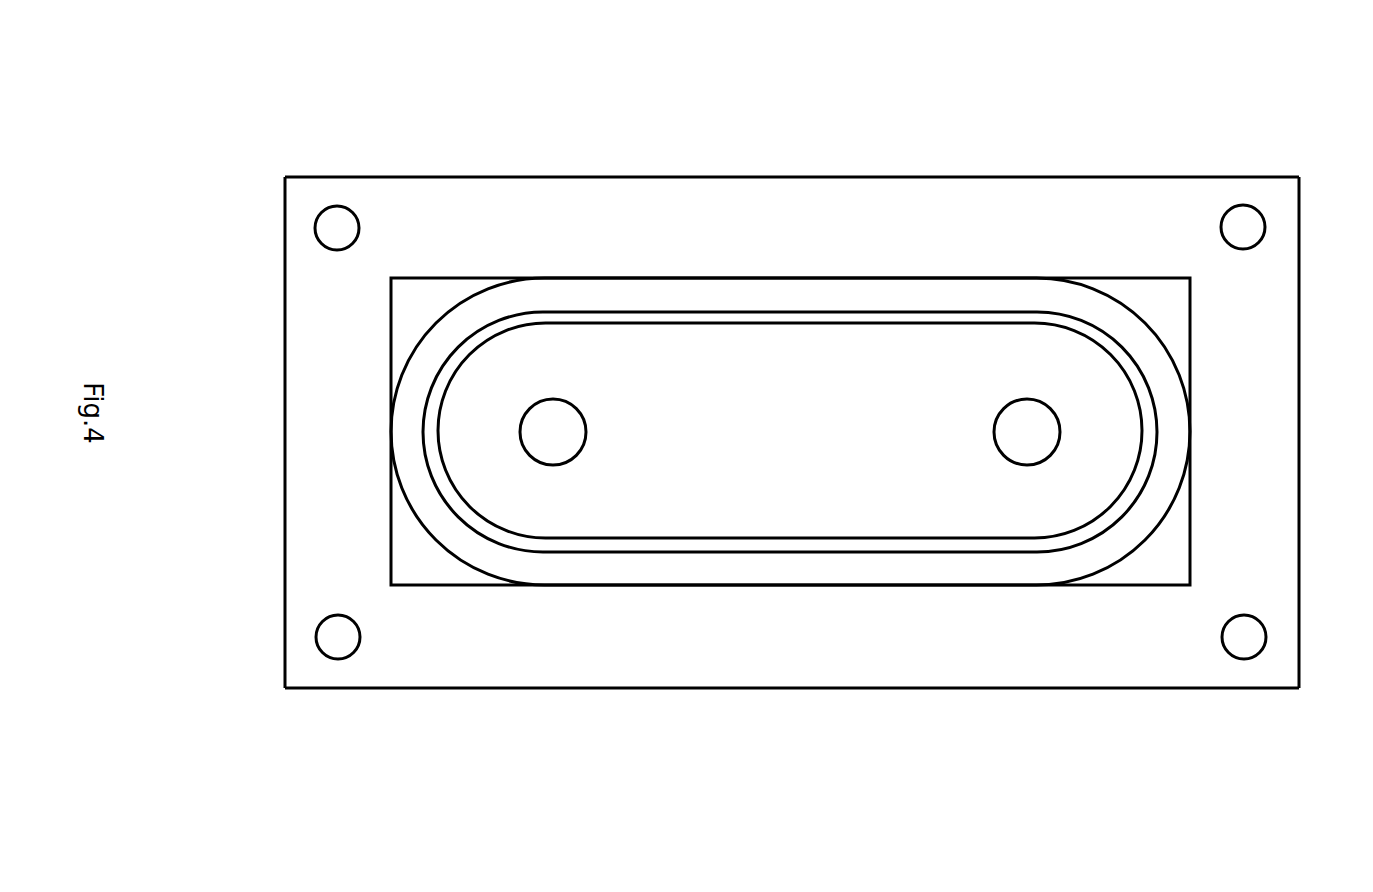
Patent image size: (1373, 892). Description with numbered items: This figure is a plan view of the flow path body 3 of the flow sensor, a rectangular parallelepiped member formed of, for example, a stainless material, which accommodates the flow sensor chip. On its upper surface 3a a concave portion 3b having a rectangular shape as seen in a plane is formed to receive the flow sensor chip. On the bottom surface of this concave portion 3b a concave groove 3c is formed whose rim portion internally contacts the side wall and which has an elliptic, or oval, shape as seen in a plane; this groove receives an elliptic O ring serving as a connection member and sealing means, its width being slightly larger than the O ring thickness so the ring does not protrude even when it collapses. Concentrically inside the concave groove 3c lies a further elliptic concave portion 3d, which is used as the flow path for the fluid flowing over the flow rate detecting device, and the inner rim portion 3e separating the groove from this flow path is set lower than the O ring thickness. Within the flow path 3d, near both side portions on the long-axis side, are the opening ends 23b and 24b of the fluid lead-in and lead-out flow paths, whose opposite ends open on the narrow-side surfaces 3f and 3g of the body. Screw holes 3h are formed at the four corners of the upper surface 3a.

The flow path body 3 is at (1259, 176).
The upper surface 3a is at (858, 207).
The concave portion 3b is at (1143, 290).
The concave groove 3c is at (742, 290).
The concave portion (flow path) 3d is at (655, 357).
The inner rim portion 3e is at (593, 320).
The side surface 3f is at (285, 455).
The side surface 3g is at (1299, 497).
The screw holes 3h is at (336, 220).
The opening end 23b is at (563, 442).
The opening end 24b is at (1028, 445).